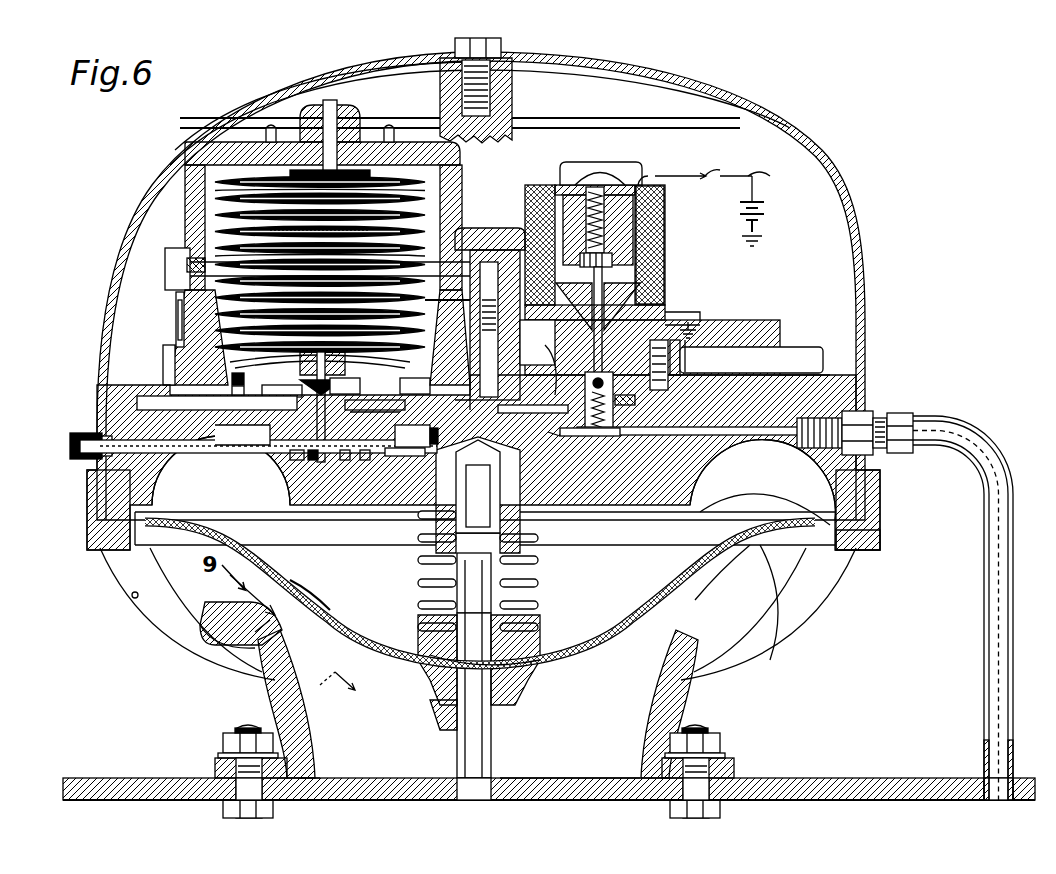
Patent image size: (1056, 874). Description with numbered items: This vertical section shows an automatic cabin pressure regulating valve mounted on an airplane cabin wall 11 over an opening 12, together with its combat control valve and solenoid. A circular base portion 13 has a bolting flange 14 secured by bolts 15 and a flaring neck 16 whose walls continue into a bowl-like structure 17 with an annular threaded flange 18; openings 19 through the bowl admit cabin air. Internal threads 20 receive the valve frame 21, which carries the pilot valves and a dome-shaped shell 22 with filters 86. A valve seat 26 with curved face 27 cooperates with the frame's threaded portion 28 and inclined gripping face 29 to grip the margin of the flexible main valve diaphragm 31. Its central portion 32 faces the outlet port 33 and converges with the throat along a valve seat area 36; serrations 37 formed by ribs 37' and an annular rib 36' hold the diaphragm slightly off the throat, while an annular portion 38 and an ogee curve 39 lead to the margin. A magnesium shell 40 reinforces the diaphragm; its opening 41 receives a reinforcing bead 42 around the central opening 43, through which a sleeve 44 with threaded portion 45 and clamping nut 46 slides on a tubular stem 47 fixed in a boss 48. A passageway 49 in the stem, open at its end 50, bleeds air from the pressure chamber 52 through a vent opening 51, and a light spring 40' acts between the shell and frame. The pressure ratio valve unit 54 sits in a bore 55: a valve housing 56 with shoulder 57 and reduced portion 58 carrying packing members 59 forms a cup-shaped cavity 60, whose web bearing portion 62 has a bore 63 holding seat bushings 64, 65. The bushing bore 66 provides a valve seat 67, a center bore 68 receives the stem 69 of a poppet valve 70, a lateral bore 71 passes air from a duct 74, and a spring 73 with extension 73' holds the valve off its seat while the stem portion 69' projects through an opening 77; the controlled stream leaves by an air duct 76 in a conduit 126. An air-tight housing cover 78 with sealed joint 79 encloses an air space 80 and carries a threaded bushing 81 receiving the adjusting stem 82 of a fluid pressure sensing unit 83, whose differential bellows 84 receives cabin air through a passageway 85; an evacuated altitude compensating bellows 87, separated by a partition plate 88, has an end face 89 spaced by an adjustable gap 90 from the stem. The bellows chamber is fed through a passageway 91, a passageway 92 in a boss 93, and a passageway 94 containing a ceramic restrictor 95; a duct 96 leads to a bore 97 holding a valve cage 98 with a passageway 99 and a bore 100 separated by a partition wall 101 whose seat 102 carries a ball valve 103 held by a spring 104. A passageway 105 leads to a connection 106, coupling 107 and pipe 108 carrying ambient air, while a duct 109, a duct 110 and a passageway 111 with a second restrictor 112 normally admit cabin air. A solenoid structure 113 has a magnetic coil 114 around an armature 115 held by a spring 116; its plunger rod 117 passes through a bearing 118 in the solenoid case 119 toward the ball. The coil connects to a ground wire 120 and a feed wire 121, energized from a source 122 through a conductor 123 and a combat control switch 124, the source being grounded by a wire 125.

The cabin wall 11 is at (850, 800).
The opening 12 is at (318, 795).
The base portion 13 is at (254, 691).
The bolting flange 14 is at (215, 762).
The bolts 15 is at (235, 730).
The neck 16 is at (680, 705).
The bowl-like structure 17 is at (808, 634).
The annular threaded flange 18 is at (87, 512).
The openings 19 is at (130, 596).
The threaded bore 20 is at (880, 468).
The valve frame 21 is at (777, 357).
The dome-shaped shell 22 is at (805, 150).
The valve seat 26 is at (860, 555).
The curved face 27 is at (770, 545).
The annular threaded portion 28 is at (790, 485).
The gripping face 29 is at (800, 505).
The main valve diaphragm 31 is at (601, 666).
The central portion 32 is at (545, 665).
The outlet port 33 is at (590, 775).
The valve seat area 36 is at (236, 613).
The annular rib 36' is at (227, 645).
The serrations 37 is at (280, 614).
The ribs 37' is at (252, 642).
The annular portion 38 is at (750, 548).
The ogee curve 39 is at (740, 530).
The shell 40 is at (228, 556).
The spring 40' is at (411, 543).
The opening 41 is at (530, 620).
The reinforcing bead 42 is at (420, 665).
The central opening 43 is at (512, 685).
The sleeve 44 is at (440, 705).
The threaded portion 45 is at (524, 583).
The clamping nut 46 is at (418, 628).
The tubular stem 47 is at (418, 605).
The boss 48 is at (522, 535).
The tubular passageway 49 is at (455, 730).
The outer end 50 is at (457, 790).
The vent opening 51 is at (520, 545).
The pressure chamber 52 is at (407, 569).
The combat or pressure ratio valve unit 54 is at (174, 136).
The cylindrical bore 55 is at (164, 380).
The valve housing 56 is at (176, 320).
The shoulder 57 is at (176, 340).
The reduced cylindrical portion 58 is at (237, 370).
The packing members 59 is at (237, 385).
The cup-shaped cavity 60 is at (195, 305).
The bearing portion 62 is at (282, 382).
The bore 63 is at (290, 435).
The lower valve seat bushing 64 is at (405, 436).
The upper valve seat bushing 65 is at (408, 380).
The central bore 66 is at (299, 463).
The valve seat 67 is at (382, 415).
The center bore 68 is at (371, 466).
The valve stem 69 is at (350, 467).
The stem portion 69' is at (345, 378).
The poppet valve 70 is at (375, 403).
The lateral bore 71 is at (405, 467).
The spring 73 is at (423, 435).
The extension part 73' is at (322, 467).
The duct 74 is at (221, 470).
The air duct 76 is at (258, 441).
The opening 77 is at (319, 407).
The housing cover 78 is at (412, 142).
The sealed joint 79 is at (165, 268).
The air space 80 is at (215, 190).
The threaded bushing 81 is at (355, 125).
The adjusting stem 82 is at (322, 112).
The fluid pressure sensing unit 83 is at (215, 213).
The Sylphon bellows 84 is at (230, 171).
The central passageway 85 is at (330, 118).
The filters 86 is at (330, 70).
The altitude compensating bellows 87 is at (222, 250).
The partition plate 88 is at (400, 210).
The end face 89 is at (320, 357).
The space 90 is at (350, 365).
The passageway 91 is at (441, 297).
The passageway 92 is at (495, 319).
The boss 93 is at (490, 232).
The passageway 94 is at (537, 341).
The restrictor 95 is at (488, 329).
The duct 96 is at (487, 421).
The cylindrical bore 97 is at (712, 356).
The valve cage 98 is at (690, 406).
The passageway 99 is at (651, 352).
The bore 100 is at (575, 436).
The partition wall 101 is at (614, 402).
The valve seat 102 is at (612, 436).
The ball valve 103 is at (533, 413).
The spring 104 is at (596, 432).
The passageway 105 is at (650, 436).
The connection 106 is at (836, 415).
The coupling 107 is at (865, 450).
The pipe 108 is at (984, 673).
The duct 109 is at (550, 363).
The duct 110 is at (641, 408).
The passageway 111 is at (697, 352).
The restrictor 112 is at (673, 327).
The solenoid structure 113 is at (675, 221).
The magnetic coil 114 is at (665, 238).
The armature 115 is at (612, 195).
The spring 116 is at (565, 185).
The plunger rod 117 is at (598, 326).
The bearing 118 is at (587, 262).
The solenoid case 119 is at (665, 315).
The ground wire 120 is at (702, 318).
The feed wire 121 is at (675, 173).
The source of electric energy 122 is at (765, 202).
The conductor 123 is at (762, 176).
The combat control switch 124 is at (718, 168).
The ground wire 125 is at (764, 236).
The conduit 126 is at (100, 432).